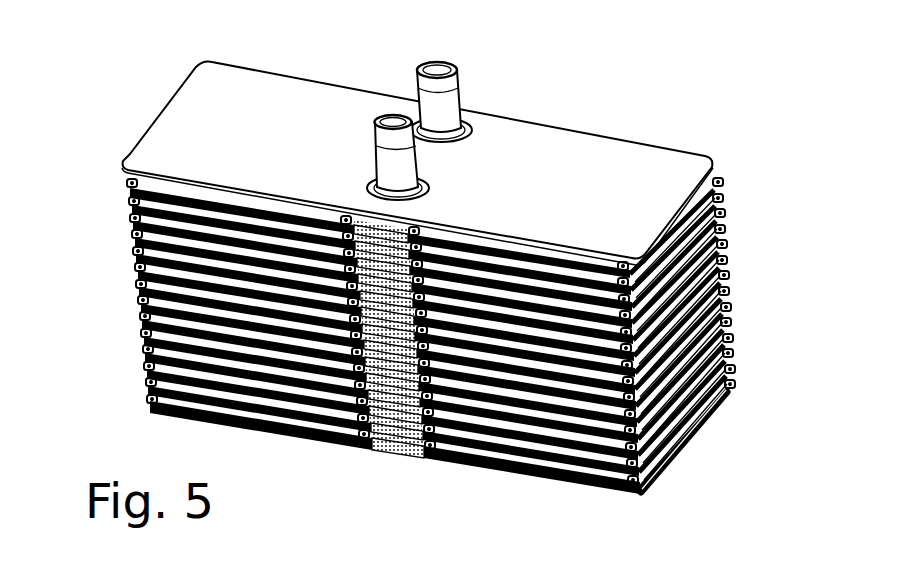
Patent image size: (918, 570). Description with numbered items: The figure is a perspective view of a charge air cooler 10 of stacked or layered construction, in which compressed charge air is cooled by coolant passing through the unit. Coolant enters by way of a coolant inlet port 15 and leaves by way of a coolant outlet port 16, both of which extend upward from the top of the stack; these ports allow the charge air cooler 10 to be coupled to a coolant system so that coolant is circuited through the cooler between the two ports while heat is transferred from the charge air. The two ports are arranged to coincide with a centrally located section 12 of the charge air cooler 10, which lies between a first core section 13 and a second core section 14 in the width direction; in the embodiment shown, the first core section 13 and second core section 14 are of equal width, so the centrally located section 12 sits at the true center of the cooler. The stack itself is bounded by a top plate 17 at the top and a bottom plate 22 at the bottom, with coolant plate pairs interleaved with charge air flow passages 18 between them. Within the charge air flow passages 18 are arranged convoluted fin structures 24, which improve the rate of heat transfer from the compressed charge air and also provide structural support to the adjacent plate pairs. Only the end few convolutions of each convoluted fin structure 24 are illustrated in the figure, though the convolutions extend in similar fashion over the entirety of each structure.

The charge air cooler 10 is at (402, 286).
The centrally located section 12 is at (333, 393).
The first core section 13 is at (225, 328).
The second core section 14 is at (488, 393).
The coolant inlet port 15 is at (367, 118).
The coolant outlet port 16 is at (462, 66).
The top plate 17 is at (163, 137).
The charge air flow passages 18 is at (172, 270).
The bottom plate 22 is at (563, 482).
The convoluted fin structures 24 is at (133, 211).